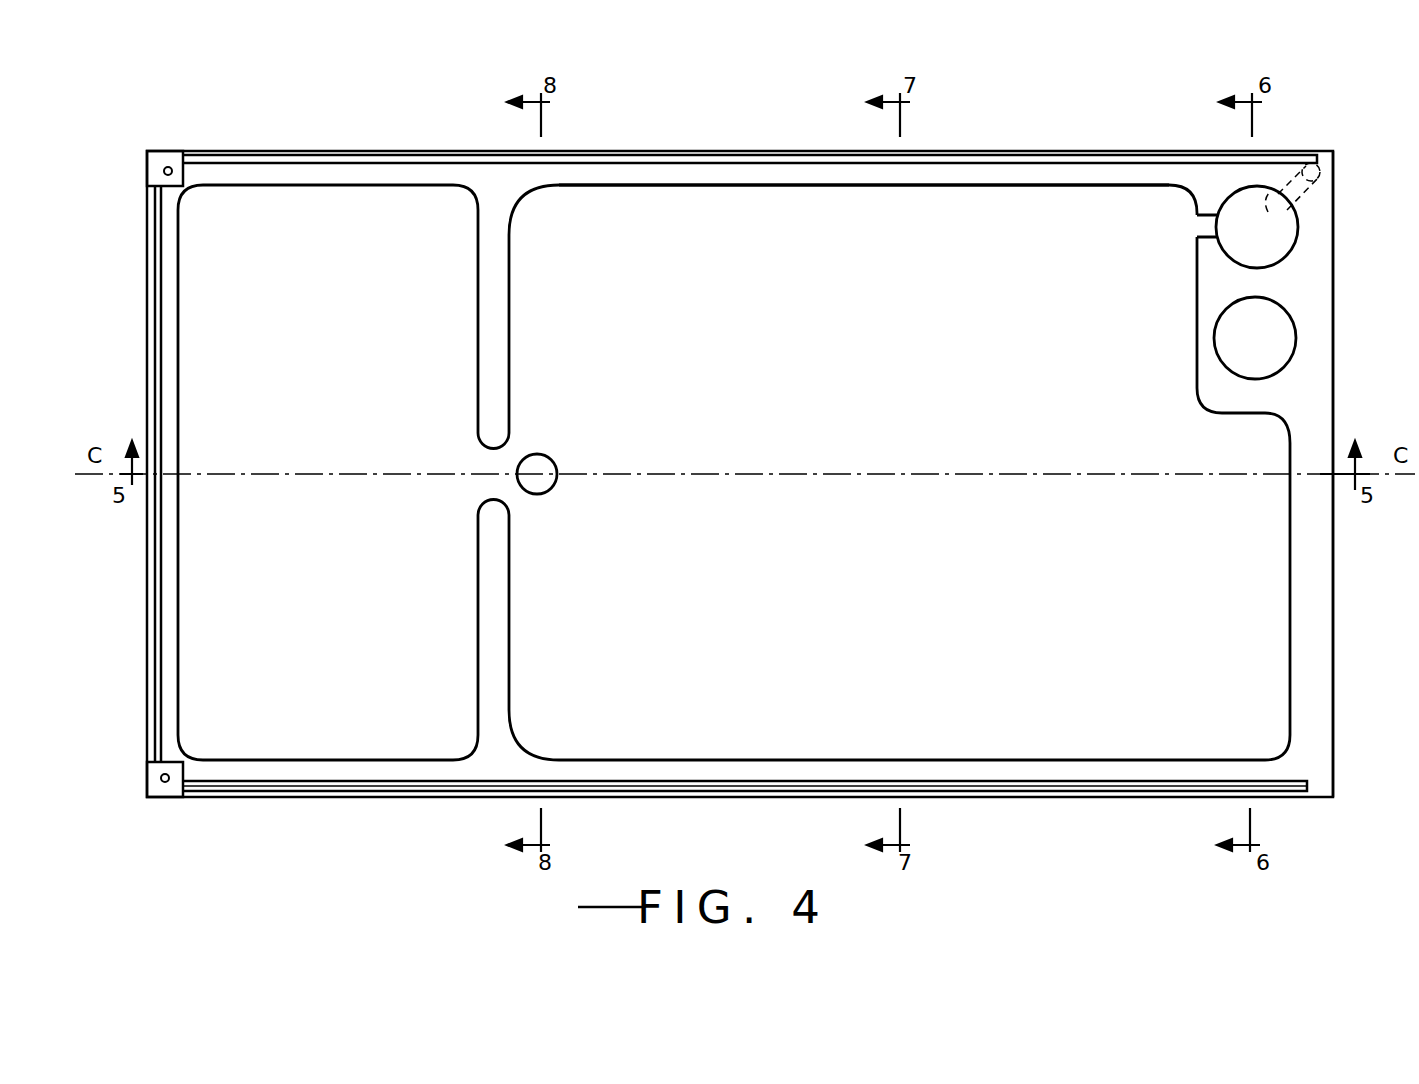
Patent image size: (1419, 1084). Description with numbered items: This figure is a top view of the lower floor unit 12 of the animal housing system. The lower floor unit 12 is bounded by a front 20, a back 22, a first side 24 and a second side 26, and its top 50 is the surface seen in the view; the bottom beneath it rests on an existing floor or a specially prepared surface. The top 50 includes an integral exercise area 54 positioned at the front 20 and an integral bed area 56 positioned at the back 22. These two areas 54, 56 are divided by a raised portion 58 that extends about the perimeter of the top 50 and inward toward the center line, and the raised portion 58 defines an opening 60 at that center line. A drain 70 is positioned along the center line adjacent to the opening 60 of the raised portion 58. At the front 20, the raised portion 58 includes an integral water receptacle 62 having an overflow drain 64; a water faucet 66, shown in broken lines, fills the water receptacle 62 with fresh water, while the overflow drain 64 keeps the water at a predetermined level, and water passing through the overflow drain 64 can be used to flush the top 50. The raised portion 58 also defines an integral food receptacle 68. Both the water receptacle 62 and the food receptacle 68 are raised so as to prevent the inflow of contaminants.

The lower floor unit 12 is at (1132, 797).
The front 20 is at (1335, 300).
The back 22 is at (147, 350).
The first side 24 is at (941, 148).
The second side 26 is at (968, 797).
The top 50 is at (868, 337).
The exercise area 54 is at (1005, 203).
The bed area 56 is at (308, 208).
The raised portion 58 is at (495, 337).
The opening 60 is at (487, 495).
The water receptacle 62 is at (1280, 228).
The overflow drain 64 is at (1200, 232).
The water faucet 66 is at (1323, 143).
The food receptacle 68 is at (1273, 340).
The drain 70 is at (537, 454).